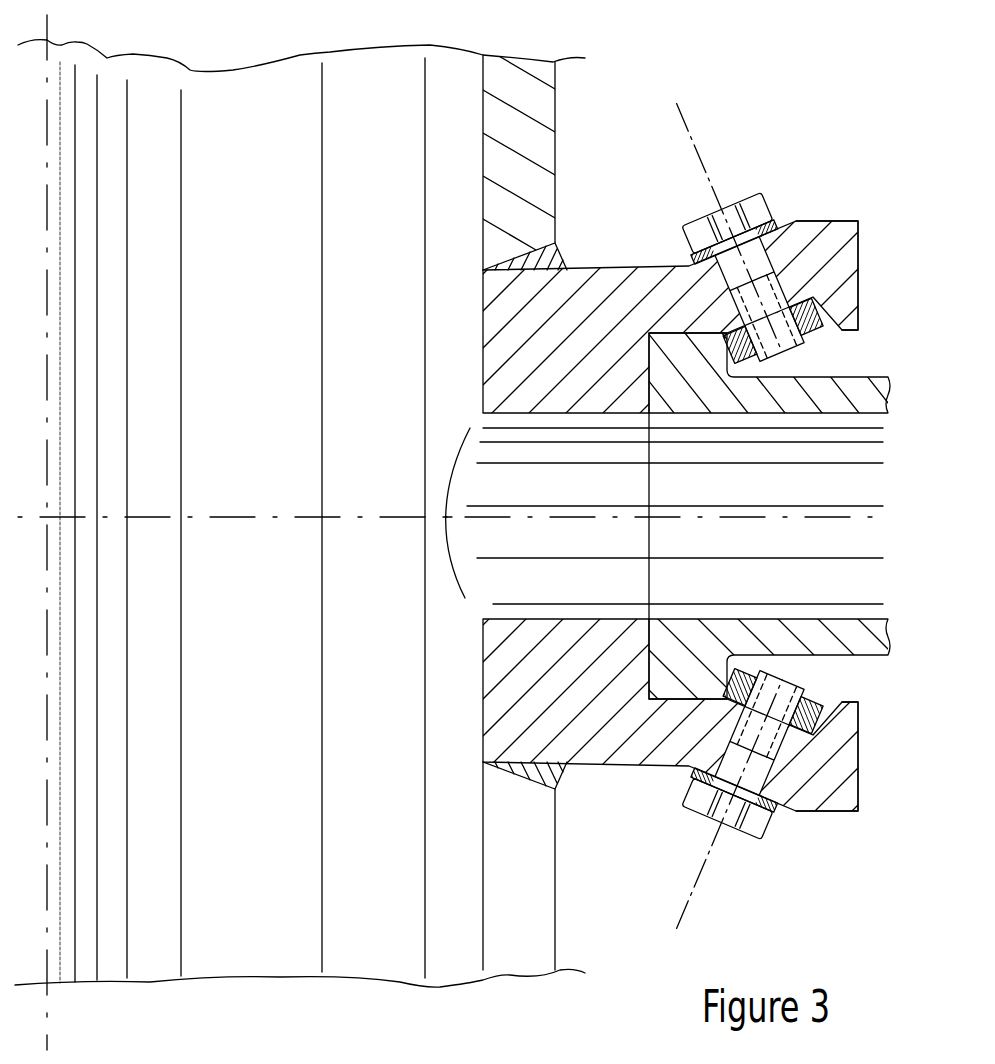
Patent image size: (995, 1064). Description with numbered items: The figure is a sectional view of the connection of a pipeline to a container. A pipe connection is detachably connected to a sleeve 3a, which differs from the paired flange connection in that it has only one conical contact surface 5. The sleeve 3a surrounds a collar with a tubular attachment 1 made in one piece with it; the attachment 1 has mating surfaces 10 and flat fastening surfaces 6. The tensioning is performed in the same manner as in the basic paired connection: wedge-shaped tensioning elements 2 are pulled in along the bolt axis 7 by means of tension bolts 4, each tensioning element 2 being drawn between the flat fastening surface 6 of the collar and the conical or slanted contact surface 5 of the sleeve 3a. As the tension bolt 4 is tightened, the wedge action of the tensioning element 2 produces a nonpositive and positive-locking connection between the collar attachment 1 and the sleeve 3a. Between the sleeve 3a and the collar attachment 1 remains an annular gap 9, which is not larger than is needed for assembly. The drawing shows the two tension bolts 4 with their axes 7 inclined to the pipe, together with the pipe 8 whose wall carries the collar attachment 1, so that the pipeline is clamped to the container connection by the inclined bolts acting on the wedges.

The tubular attachment 1 is at (685, 375).
The tensioning element 2 is at (700, 330).
The sleeve 3a is at (824, 235).
The tension bolt 4 is at (750, 247).
The conical contact surface 5 is at (820, 332).
The fastening surface 6 is at (660, 647).
The bolt axis 7 is at (685, 120).
The pipe 8 is at (305, 512).
The annular gap 9 is at (648, 320).
The mating surface 10 is at (630, 640).